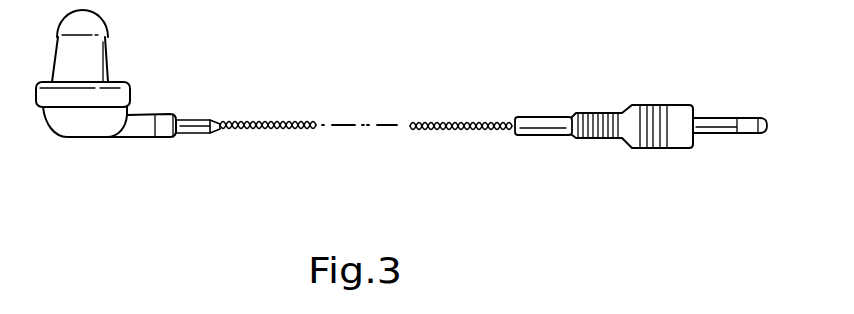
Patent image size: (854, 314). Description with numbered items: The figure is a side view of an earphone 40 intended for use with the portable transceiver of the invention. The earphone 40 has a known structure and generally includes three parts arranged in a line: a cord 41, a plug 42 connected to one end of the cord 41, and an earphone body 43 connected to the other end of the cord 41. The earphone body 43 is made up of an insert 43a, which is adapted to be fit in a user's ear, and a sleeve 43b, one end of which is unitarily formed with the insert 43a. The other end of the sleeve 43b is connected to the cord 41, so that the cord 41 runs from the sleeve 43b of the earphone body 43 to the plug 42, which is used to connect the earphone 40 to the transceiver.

The earphone 40 is at (562, 67).
The cord 41 is at (440, 126).
The plug 42 is at (675, 120).
The earphone body 43 is at (77, 122).
The insert 43a is at (95, 65).
The sleeve 43b is at (163, 131).